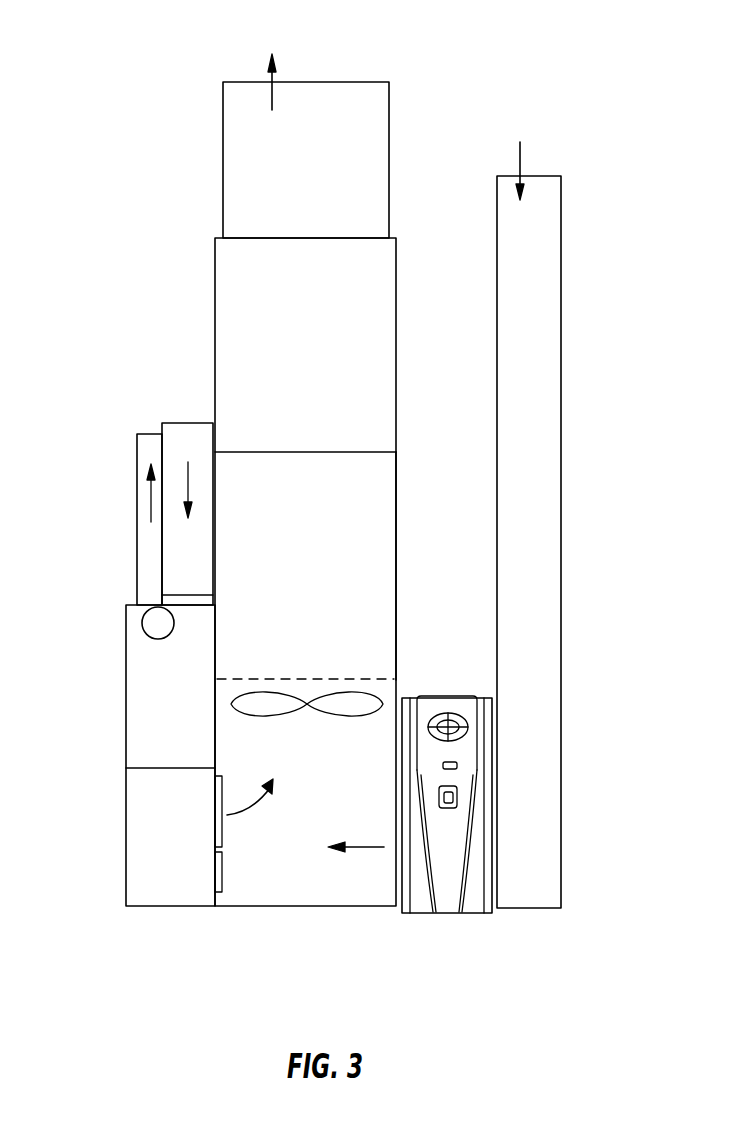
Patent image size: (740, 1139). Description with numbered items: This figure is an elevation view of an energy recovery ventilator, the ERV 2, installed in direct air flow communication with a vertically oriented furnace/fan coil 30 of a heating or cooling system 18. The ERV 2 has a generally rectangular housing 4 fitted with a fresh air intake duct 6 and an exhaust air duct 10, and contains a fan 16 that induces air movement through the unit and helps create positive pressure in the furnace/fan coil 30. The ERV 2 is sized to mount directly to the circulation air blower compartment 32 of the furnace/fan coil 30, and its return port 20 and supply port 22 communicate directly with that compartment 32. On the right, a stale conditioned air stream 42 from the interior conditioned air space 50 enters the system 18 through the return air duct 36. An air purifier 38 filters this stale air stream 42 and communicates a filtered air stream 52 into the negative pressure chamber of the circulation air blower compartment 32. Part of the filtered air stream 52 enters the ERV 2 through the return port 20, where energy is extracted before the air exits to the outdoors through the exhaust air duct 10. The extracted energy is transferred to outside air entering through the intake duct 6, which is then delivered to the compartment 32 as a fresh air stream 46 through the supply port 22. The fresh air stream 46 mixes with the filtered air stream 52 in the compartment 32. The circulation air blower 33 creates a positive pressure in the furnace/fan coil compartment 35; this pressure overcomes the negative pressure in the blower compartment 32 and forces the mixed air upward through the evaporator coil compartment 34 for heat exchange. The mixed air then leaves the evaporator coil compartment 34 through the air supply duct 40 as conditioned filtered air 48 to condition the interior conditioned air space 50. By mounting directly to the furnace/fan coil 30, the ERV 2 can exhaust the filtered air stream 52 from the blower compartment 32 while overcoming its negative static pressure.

The ERV 2 is at (86, 647).
The housing 4 is at (127, 815).
The fresh air intake duct 6 is at (190, 423).
The exhaust air duct 10 is at (148, 434).
The fan 16 is at (160, 626).
The heating or cooling system 18 is at (195, 246).
The return port 20 is at (214, 877).
The supply port 22 is at (222, 797).
The furnace/fan coil 30 is at (402, 572).
The circulation air blower compartment 32 is at (305, 883).
The circulation air blower 33 is at (367, 699).
The evaporator coil compartment 34 is at (388, 350).
The furnace/fan coil compartment 35 is at (385, 500).
The return air duct 36 is at (544, 357).
The air purifier 38 is at (448, 880).
The air supply duct 40 is at (370, 156).
The stale conditioned air stream 42 is at (520, 158).
The fresh air stream 46 is at (240, 815).
The conditioned filtered air 48 is at (270, 76).
The interior conditioned air space 50 is at (439, 47).
The filtered air stream 52 is at (357, 847).